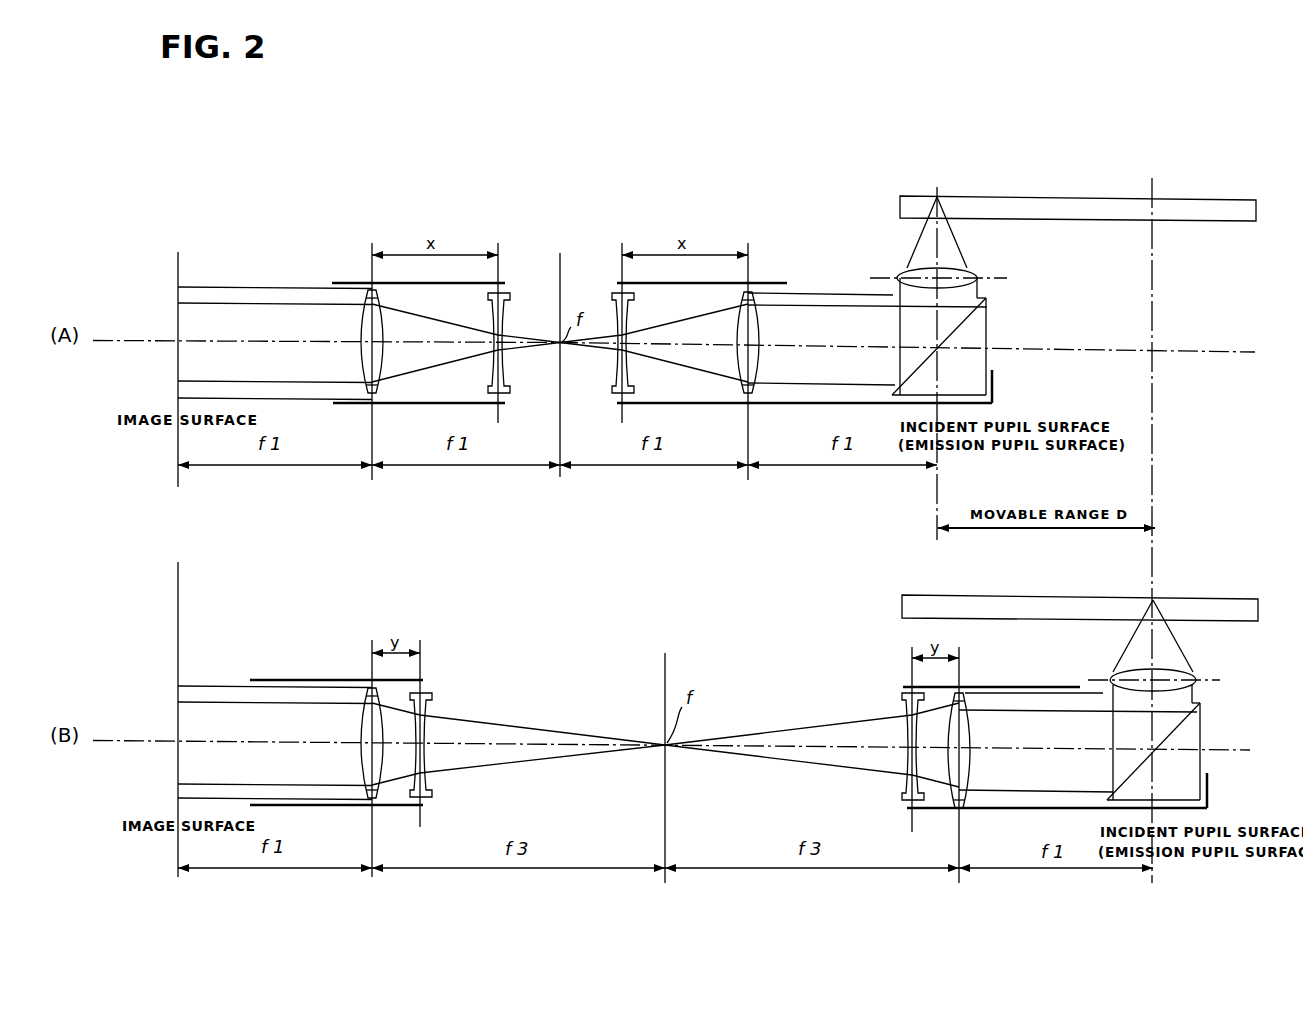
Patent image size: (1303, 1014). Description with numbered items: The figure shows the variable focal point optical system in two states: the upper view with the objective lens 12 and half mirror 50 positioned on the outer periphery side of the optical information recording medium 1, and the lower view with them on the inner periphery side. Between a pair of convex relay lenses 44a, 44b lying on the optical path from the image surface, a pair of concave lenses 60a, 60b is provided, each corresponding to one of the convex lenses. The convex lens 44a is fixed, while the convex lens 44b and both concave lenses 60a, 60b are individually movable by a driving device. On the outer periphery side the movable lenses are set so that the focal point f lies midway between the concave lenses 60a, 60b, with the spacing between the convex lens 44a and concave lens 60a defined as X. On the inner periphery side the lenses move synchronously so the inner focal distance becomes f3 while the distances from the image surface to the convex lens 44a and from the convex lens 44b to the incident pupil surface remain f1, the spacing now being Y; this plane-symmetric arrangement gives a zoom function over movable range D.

In FIG. 2A, the optical information recording medium 1 is at (1039, 191).
In FIG. 2B, the optical information recording medium 1 is at (1202, 594).
In FIG. 2A, the objective lens 12 is at (985, 273).
In FIG. 2B, the objective lens 12 is at (1197, 675).
In FIG. 2A, the half mirror 50 is at (978, 357).
In FIG. 2B, the half mirror 50 is at (1195, 742).
In FIG. 2A, the convex lens 44a is at (367, 292).
In FIG. 2B, the convex lens 44a is at (367, 692).
In FIG. 2A, the convex lens 44b is at (760, 297).
In FIG. 2B, the convex lens 44b is at (963, 693).
In FIG. 2A, the concave lens 60a is at (510, 303).
In FIG. 2B, the concave lens 60a is at (427, 697).
In FIG. 2A, the concave lens 60b is at (612, 303).
In FIG. 2B, the concave lens 60b is at (903, 707).